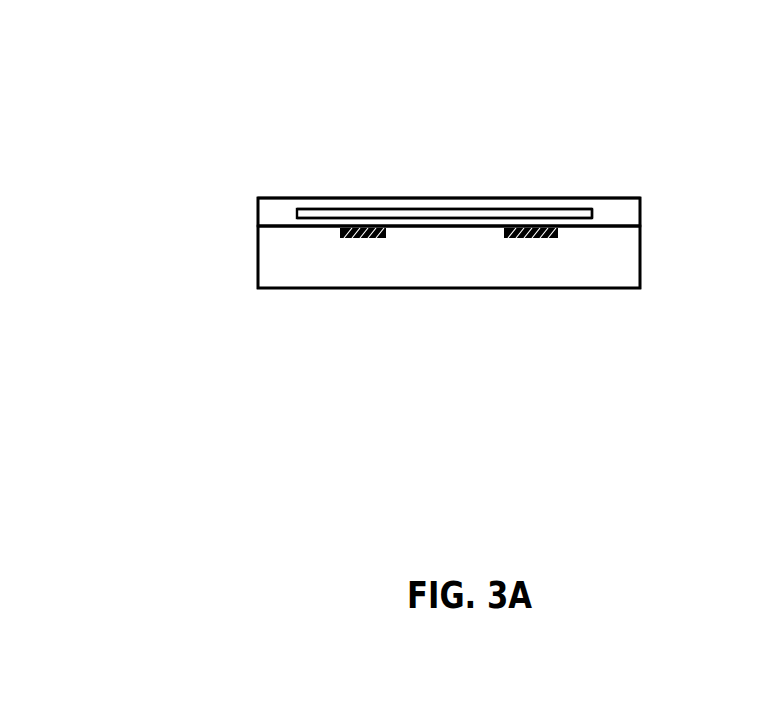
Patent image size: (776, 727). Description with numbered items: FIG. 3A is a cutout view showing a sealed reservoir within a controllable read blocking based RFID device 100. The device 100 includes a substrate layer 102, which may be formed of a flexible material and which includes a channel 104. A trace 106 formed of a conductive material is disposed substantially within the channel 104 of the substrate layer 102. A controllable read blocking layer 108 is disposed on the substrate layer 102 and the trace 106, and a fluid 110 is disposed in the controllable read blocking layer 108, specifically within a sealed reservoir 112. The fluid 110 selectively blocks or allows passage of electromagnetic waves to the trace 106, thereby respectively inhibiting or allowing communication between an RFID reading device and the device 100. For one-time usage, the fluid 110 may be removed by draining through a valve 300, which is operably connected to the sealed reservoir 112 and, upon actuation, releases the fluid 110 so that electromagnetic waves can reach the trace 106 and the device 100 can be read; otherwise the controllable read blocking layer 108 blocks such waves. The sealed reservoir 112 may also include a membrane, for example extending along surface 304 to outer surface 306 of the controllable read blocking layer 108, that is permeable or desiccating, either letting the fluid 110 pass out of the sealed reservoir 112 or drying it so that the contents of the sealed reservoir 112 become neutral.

The device 100 is at (425, 311).
The substrate layer 102 is at (641, 265).
The channel 104 is at (333, 230).
The trace 106 is at (352, 238).
The controllable read blocking layer 108 is at (257, 211).
The fluid 110 is at (457, 210).
The sealed reservoir 112 is at (375, 208).
The valve 300 is at (594, 209).
The surface 304 is at (527, 206).
The outer surface 306 is at (327, 197).